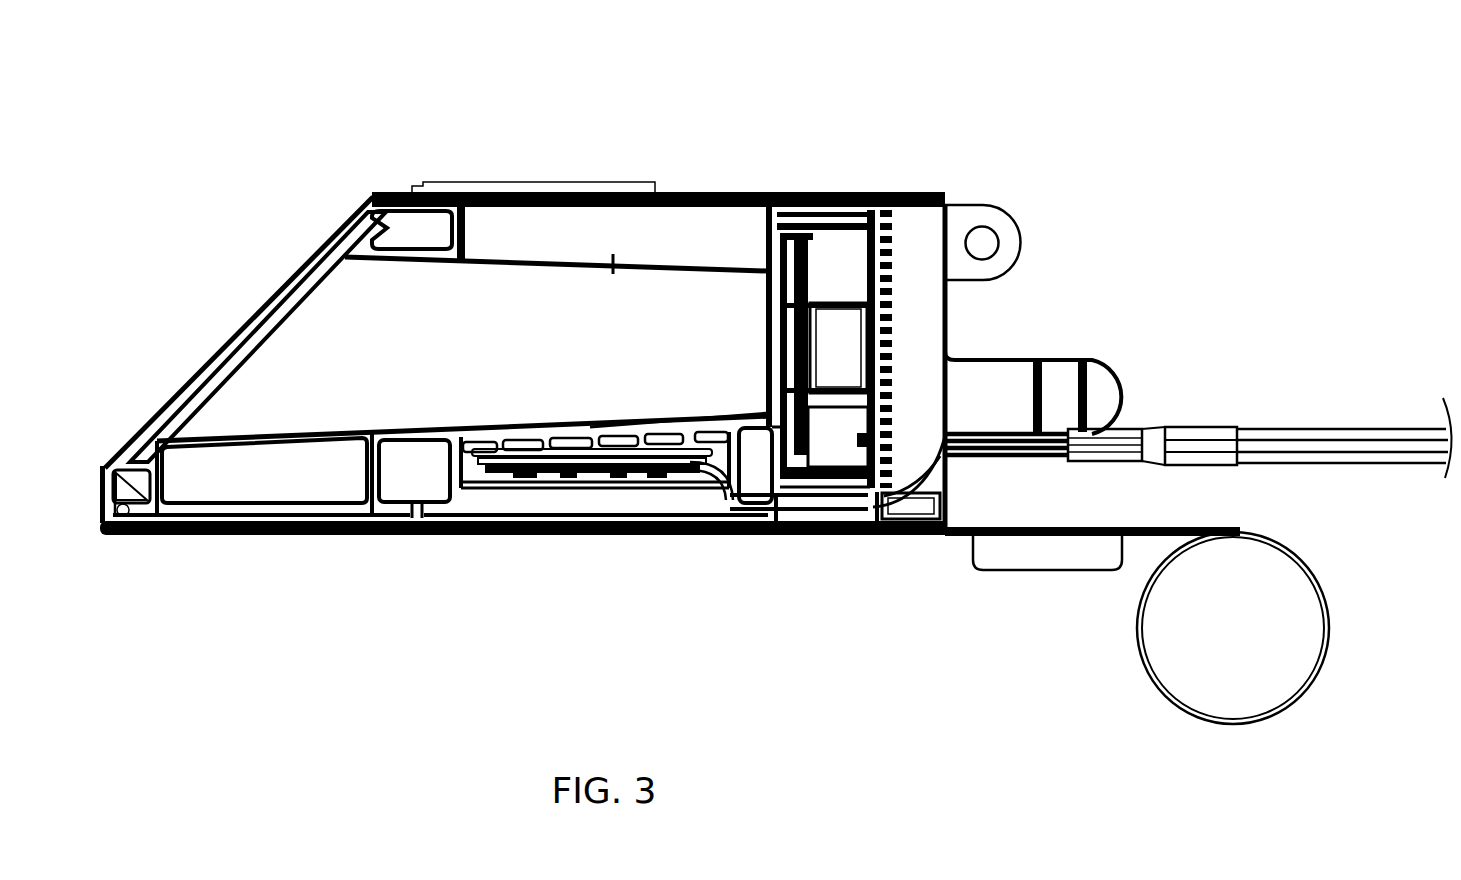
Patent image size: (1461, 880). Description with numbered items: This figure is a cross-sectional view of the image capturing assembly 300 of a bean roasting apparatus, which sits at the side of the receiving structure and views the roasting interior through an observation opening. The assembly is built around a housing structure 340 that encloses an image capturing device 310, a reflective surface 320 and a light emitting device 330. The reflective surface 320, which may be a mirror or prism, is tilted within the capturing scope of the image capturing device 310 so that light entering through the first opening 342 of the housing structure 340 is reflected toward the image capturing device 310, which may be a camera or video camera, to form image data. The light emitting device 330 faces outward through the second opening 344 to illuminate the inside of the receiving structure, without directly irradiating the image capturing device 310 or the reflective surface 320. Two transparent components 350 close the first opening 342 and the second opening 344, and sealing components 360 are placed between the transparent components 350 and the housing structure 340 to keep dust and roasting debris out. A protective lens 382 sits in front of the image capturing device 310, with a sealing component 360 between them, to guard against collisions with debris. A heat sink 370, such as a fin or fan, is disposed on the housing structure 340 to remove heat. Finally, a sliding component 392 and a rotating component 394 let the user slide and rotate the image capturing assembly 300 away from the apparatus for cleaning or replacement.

The image capturing assembly 300 is at (1221, 46).
The image capturing device 310 is at (853, 192).
The reflective surface 320 is at (223, 347).
The light emitting device 330 is at (598, 480).
The housing structure 340 is at (372, 210).
The first opening 342 is at (315, 553).
The second opening 344 is at (575, 553).
The transparent component 350 is at (188, 522).
The sealing component 360 is at (812, 247).
The heat sink 370 is at (645, 190).
The protective lens 382 is at (793, 250).
The sliding component 392 is at (1092, 566).
The rotating component 394 is at (1330, 610).